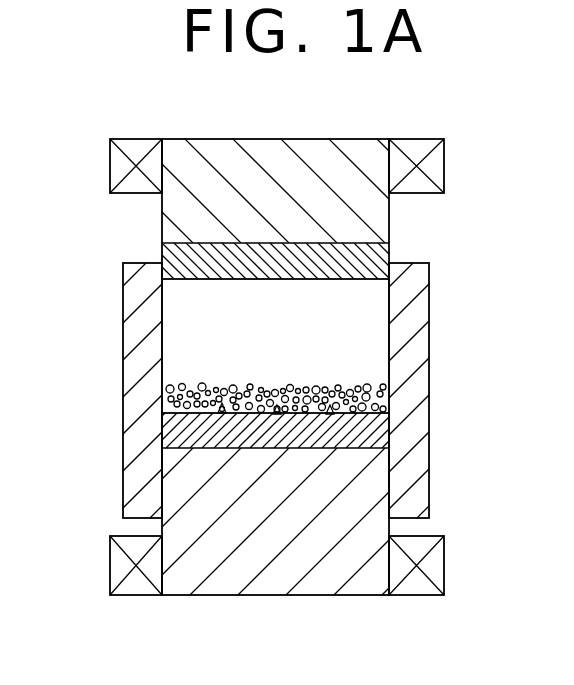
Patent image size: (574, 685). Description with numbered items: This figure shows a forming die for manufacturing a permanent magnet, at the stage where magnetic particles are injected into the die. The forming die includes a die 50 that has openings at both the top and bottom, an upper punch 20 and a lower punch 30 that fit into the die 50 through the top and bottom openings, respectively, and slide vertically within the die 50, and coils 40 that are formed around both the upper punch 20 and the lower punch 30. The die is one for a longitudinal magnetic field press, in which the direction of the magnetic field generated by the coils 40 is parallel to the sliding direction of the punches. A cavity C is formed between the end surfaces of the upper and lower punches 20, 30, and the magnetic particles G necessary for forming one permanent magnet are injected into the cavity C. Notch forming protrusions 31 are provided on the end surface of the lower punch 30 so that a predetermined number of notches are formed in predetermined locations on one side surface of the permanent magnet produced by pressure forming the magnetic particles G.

The upper punch 20 is at (373, 219).
The lower punch 30 is at (302, 556).
The notch forming protrusions 31 is at (222, 413).
The coils 40 is at (122, 165).
The die 50 is at (140, 337).
The magnetic particles G is at (267, 392).
The cavity C is at (350, 378).